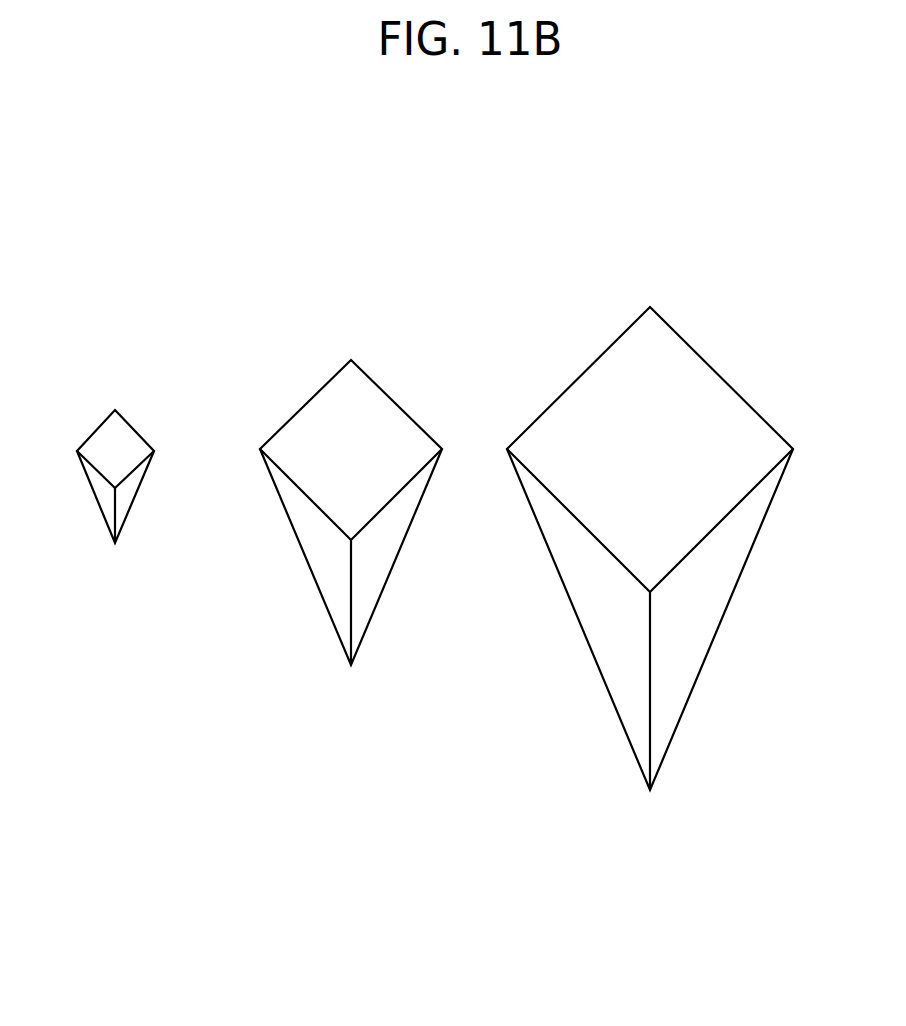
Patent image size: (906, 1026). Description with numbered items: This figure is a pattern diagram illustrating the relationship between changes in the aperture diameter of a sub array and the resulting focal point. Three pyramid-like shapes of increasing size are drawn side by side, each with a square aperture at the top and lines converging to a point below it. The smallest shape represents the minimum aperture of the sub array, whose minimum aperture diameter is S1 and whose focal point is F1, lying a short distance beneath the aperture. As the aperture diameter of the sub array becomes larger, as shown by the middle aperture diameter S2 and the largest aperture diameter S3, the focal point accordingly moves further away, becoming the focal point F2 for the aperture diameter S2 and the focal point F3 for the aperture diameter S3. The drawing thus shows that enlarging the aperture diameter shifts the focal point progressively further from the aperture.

The minimum aperture diameter S1 is at (115, 449).
The focal point F1 is at (115, 550).
The aperture diameter S2 is at (351, 450).
The focal point F2 is at (350, 674).
The aperture diameter S3 is at (650, 449).
The focal point F3 is at (649, 800).